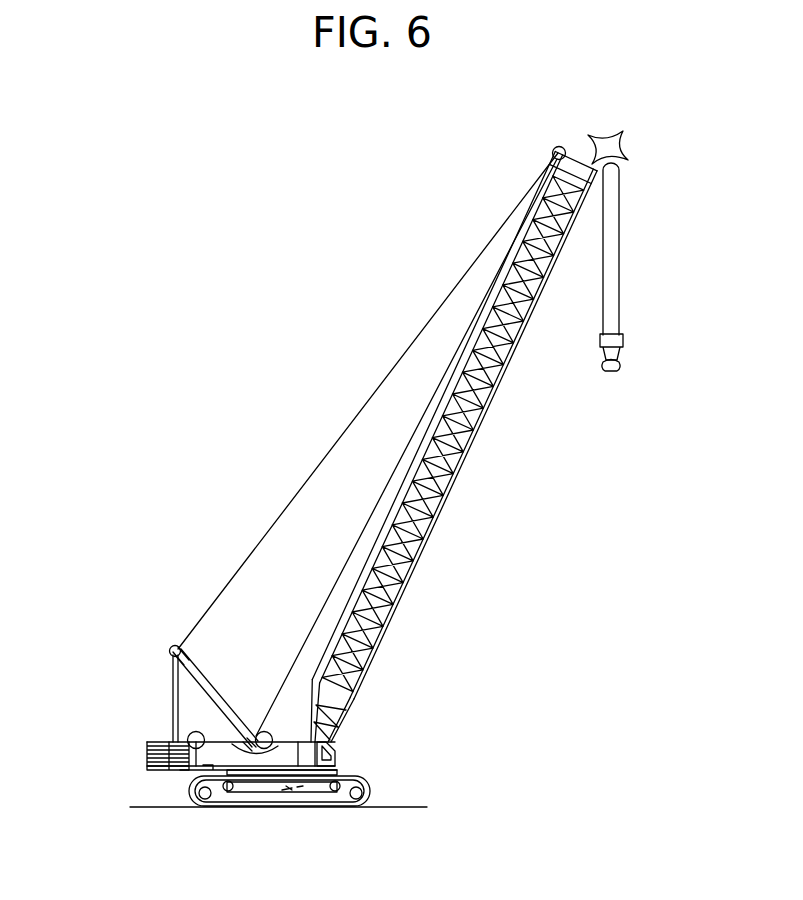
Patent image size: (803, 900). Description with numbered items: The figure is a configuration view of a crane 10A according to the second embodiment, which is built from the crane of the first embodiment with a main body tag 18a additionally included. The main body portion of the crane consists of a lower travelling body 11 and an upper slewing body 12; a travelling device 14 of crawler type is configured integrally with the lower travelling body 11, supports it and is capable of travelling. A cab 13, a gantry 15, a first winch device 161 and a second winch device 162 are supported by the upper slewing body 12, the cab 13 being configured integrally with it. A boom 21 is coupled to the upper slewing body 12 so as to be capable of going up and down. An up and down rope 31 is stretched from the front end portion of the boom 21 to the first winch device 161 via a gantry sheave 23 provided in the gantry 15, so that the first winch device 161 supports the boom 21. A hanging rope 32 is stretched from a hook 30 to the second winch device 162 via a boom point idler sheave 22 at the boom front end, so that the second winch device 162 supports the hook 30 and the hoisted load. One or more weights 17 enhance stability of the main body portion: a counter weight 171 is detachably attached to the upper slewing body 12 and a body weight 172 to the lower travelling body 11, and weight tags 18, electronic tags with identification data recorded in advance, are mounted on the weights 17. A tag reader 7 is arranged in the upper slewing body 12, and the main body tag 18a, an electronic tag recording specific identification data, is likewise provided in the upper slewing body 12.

The crane 10A is at (226, 192).
The boom 21 is at (466, 482).
The boom point idler sheave 22 is at (622, 157).
The hanging rope 32 is at (621, 264).
The hook 30 is at (622, 368).
The up and down rope 31 is at (313, 470).
The gantry sheave 23 is at (177, 645).
The first winch device 161 is at (190, 732).
The second winch device 162 is at (246, 733).
The gantry 15 is at (200, 674).
The main body tag 18a is at (290, 733).
The cab 13 is at (335, 746).
The upper slewing body 12 is at (178, 771).
The counter weight 171 is at (147, 752).
The weight 17 is at (229, 789).
The weight tag 18 is at (147, 771).
The tag reader 7 is at (190, 773).
The lower travelling body 11 is at (184, 776).
The body weight 172 is at (344, 794).
The travelling device 14 is at (370, 794).